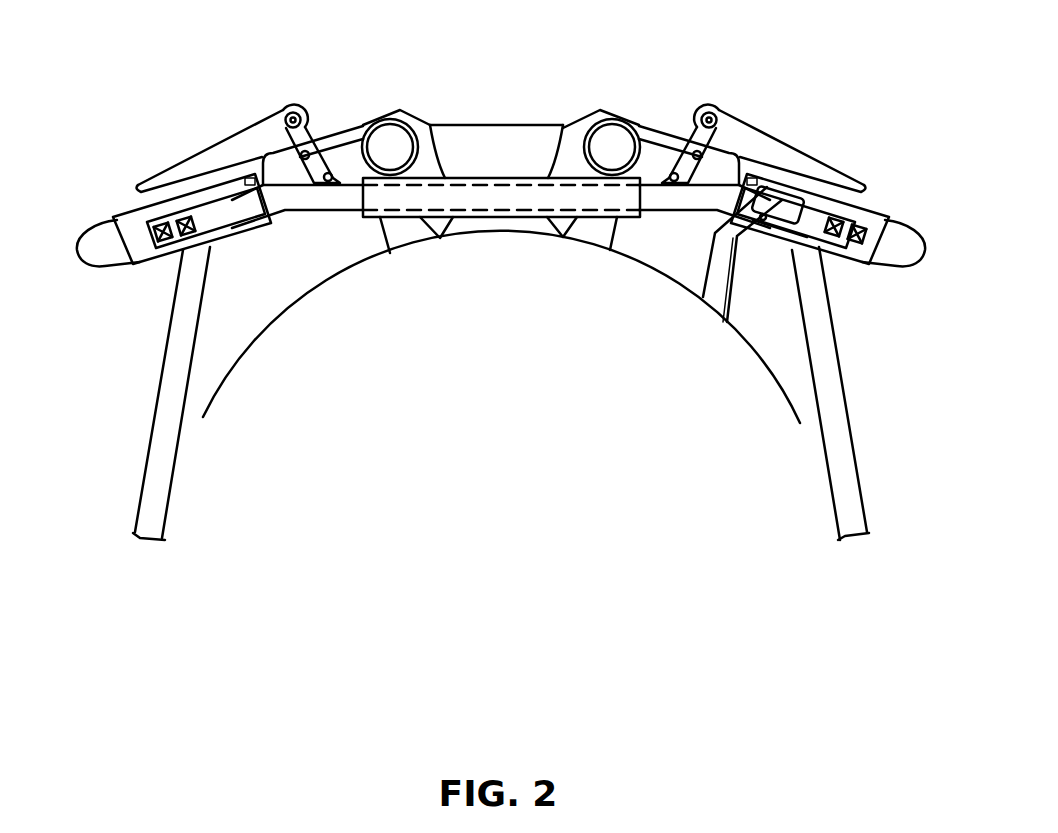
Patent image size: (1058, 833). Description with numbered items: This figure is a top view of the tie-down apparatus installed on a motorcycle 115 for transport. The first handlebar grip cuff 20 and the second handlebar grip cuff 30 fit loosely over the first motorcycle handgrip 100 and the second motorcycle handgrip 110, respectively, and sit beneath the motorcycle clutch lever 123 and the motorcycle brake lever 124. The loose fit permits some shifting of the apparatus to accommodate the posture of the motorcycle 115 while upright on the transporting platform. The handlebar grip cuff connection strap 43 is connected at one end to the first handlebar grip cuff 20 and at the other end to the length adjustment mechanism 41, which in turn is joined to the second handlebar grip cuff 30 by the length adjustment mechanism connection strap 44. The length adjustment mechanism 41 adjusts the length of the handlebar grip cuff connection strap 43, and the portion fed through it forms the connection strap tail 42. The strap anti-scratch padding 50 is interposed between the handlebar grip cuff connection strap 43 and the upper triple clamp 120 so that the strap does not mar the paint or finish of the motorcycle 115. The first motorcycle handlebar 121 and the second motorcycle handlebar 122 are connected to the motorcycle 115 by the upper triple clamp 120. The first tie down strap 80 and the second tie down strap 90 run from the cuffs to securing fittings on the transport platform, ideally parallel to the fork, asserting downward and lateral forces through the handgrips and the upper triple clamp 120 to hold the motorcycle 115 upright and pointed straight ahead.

The first handlebar grip cuff 20 is at (122, 208).
The second handlebar grip cuff 30 is at (877, 217).
The length adjustment mechanism 41 is at (783, 182).
The connection strap tail 42 is at (733, 287).
The handlebar grip cuff connection strap 43 is at (655, 127).
The length adjustment mechanism connection strap 44 is at (840, 213).
The strap anti-scratch padding 50 is at (431, 125).
The first tie down strap 80 is at (152, 400).
The second tie down strap 90 is at (848, 428).
The first motorcycle handgrip 100 is at (76, 247).
The second motorcycle handgrip 110 is at (910, 240).
The motorcycle 115 is at (625, 377).
The upper triple clamp 120 is at (525, 127).
The first motorcycle handlebar 121 is at (333, 128).
The second motorcycle handlebar 122 is at (601, 112).
The motorcycle clutch lever 123 is at (197, 155).
The motorcycle brake lever 124 is at (741, 128).